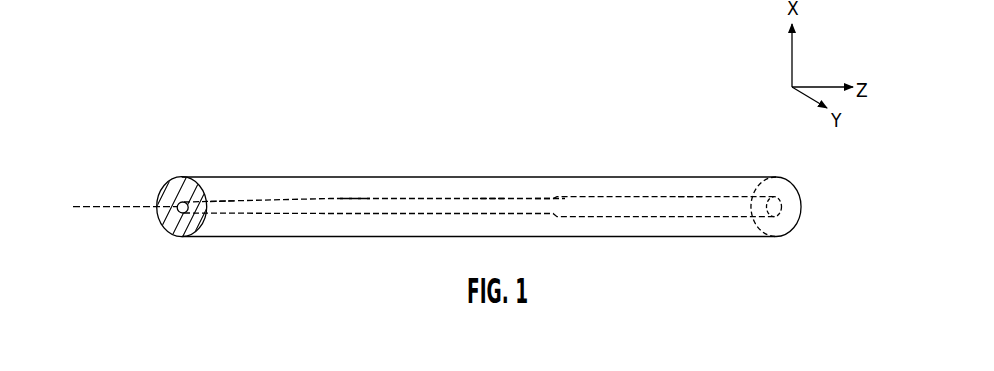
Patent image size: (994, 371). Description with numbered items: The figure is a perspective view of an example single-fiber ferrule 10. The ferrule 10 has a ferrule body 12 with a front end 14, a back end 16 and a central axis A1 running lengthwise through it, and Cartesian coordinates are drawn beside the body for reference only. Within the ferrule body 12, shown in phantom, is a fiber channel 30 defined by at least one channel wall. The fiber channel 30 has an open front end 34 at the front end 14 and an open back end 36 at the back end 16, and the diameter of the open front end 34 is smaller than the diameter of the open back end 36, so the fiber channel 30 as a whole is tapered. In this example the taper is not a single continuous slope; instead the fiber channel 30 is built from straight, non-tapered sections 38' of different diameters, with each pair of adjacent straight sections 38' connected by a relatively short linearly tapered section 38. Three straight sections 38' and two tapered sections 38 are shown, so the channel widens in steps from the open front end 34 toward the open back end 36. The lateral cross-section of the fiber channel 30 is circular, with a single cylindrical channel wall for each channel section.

The central axis A1 is at (110, 206).
The single-fiber ferrule 10 is at (200, 139).
The ferrule body 12 is at (557, 178).
The front end 14 is at (173, 197).
The back end 16 is at (802, 197).
The fiber channel 30 is at (437, 197).
The open front end 34 is at (185, 233).
The open back end 36 is at (782, 207).
The tapered channel section 38 is at (434, 157).
The straight channel section 38' is at (477, 162).